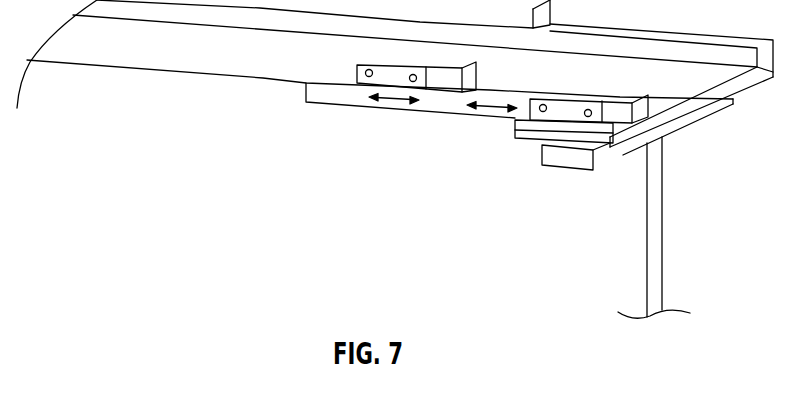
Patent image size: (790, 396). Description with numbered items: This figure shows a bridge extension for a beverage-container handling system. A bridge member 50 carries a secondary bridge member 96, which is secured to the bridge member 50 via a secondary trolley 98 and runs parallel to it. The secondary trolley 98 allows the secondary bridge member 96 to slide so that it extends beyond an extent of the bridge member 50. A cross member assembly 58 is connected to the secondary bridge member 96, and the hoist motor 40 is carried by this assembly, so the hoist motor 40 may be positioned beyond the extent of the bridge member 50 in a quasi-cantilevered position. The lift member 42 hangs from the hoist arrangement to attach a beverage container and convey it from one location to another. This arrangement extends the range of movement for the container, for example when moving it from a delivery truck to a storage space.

The bridge member 50 is at (147, 70).
The secondary bridge member 96 is at (612, 28).
The secondary trolley 98 is at (363, 84).
The cross member assembly 58 is at (515, 138).
The hoist motor 40 is at (550, 167).
The lift member 42 is at (645, 213).